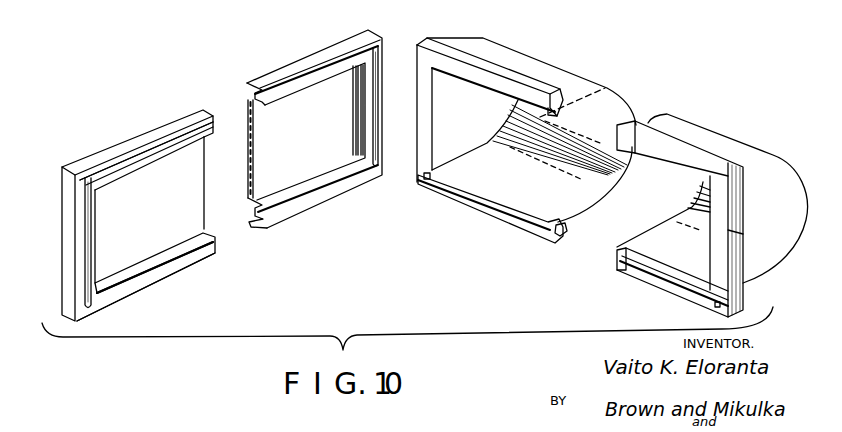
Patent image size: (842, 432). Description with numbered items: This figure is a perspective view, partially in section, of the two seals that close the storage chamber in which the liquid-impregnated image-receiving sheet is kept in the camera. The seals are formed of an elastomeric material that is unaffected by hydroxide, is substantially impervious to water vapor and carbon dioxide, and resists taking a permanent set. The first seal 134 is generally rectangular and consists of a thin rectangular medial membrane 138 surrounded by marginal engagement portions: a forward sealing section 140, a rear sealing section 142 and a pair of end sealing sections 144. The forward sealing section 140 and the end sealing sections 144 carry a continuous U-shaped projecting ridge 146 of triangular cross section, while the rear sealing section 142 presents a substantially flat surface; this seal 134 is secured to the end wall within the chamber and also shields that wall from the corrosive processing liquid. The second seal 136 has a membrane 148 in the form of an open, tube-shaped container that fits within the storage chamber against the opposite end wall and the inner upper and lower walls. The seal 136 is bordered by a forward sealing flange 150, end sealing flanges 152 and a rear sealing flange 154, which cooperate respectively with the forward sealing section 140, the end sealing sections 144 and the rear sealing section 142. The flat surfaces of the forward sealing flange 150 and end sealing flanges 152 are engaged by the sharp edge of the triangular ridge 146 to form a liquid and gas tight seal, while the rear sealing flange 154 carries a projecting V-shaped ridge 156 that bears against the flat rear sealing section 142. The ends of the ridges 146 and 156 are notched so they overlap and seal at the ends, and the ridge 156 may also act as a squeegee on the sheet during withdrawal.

The seal 134 is at (107, 138).
The seal 136 is at (538, 145).
The medial membrane 138 is at (263, 152).
The forward sealing section 140 is at (285, 72).
The rear sealing section 142 is at (163, 270).
The end sealing sections 144 is at (80, 193).
The U-shaped projecting ridge 146 is at (177, 140).
The membrane 148 is at (518, 47).
The forward sealing flange 150 is at (678, 162).
The end sealing flanges 152 is at (430, 118).
The rear sealing flange 154 is at (560, 236).
The V-shaped ridge 156 is at (490, 207).